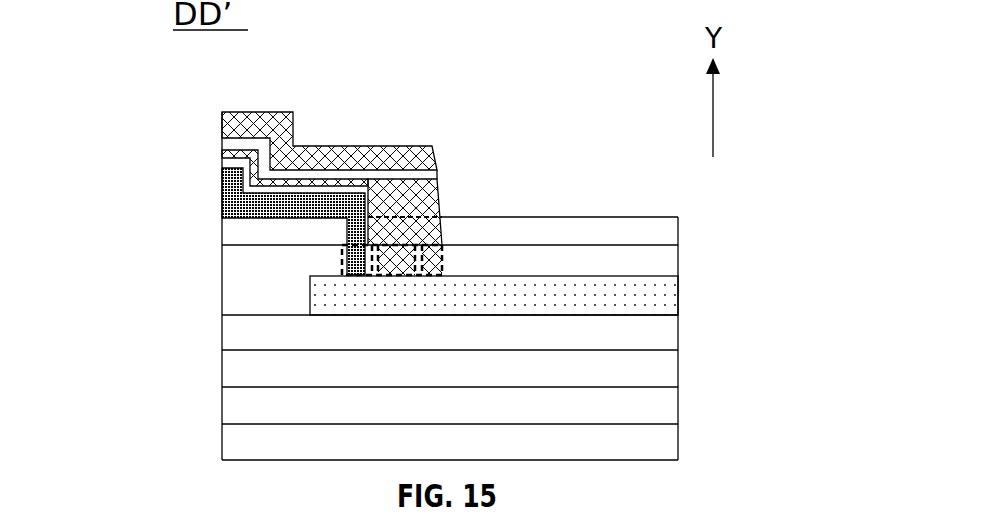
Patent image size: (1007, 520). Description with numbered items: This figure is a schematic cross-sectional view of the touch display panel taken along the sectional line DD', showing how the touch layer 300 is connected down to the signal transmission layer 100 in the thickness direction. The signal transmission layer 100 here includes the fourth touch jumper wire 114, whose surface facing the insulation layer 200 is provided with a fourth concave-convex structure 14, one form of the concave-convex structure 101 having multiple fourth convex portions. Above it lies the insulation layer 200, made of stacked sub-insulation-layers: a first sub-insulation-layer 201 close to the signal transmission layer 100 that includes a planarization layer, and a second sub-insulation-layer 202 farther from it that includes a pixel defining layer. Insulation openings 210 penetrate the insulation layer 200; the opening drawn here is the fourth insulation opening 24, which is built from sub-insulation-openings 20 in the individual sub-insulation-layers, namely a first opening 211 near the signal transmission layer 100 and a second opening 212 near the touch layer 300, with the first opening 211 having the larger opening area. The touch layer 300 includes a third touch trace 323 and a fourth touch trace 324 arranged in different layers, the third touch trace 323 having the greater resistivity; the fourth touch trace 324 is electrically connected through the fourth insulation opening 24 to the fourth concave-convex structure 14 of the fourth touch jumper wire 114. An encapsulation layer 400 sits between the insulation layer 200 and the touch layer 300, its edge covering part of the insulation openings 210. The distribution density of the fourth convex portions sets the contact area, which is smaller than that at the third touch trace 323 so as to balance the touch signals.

The signal transmission layer 100 is at (586, 297).
The fourth touch jumper wire 114 is at (680, 300).
The insulation layer 200 is at (547, 243).
The first sub-insulation-layer 201 is at (680, 259).
The second sub-insulation-layer 202 is at (680, 221).
The insulation openings 210 is at (512, 164).
The fourth insulation opening 24 is at (512, 164).
The sub-insulation-openings 20 is at (475, 165).
The first opening 211 is at (442, 258).
The second opening 212 is at (442, 222).
The concave-convex structure 101 is at (254, 223).
The fourth concave-convex structure 14 is at (254, 221).
The encapsulation layer 400 is at (342, 262).
The touch layer 300 is at (230, 147).
The third touch trace 323 is at (222, 134).
The fourth touch trace 324 is at (222, 162).